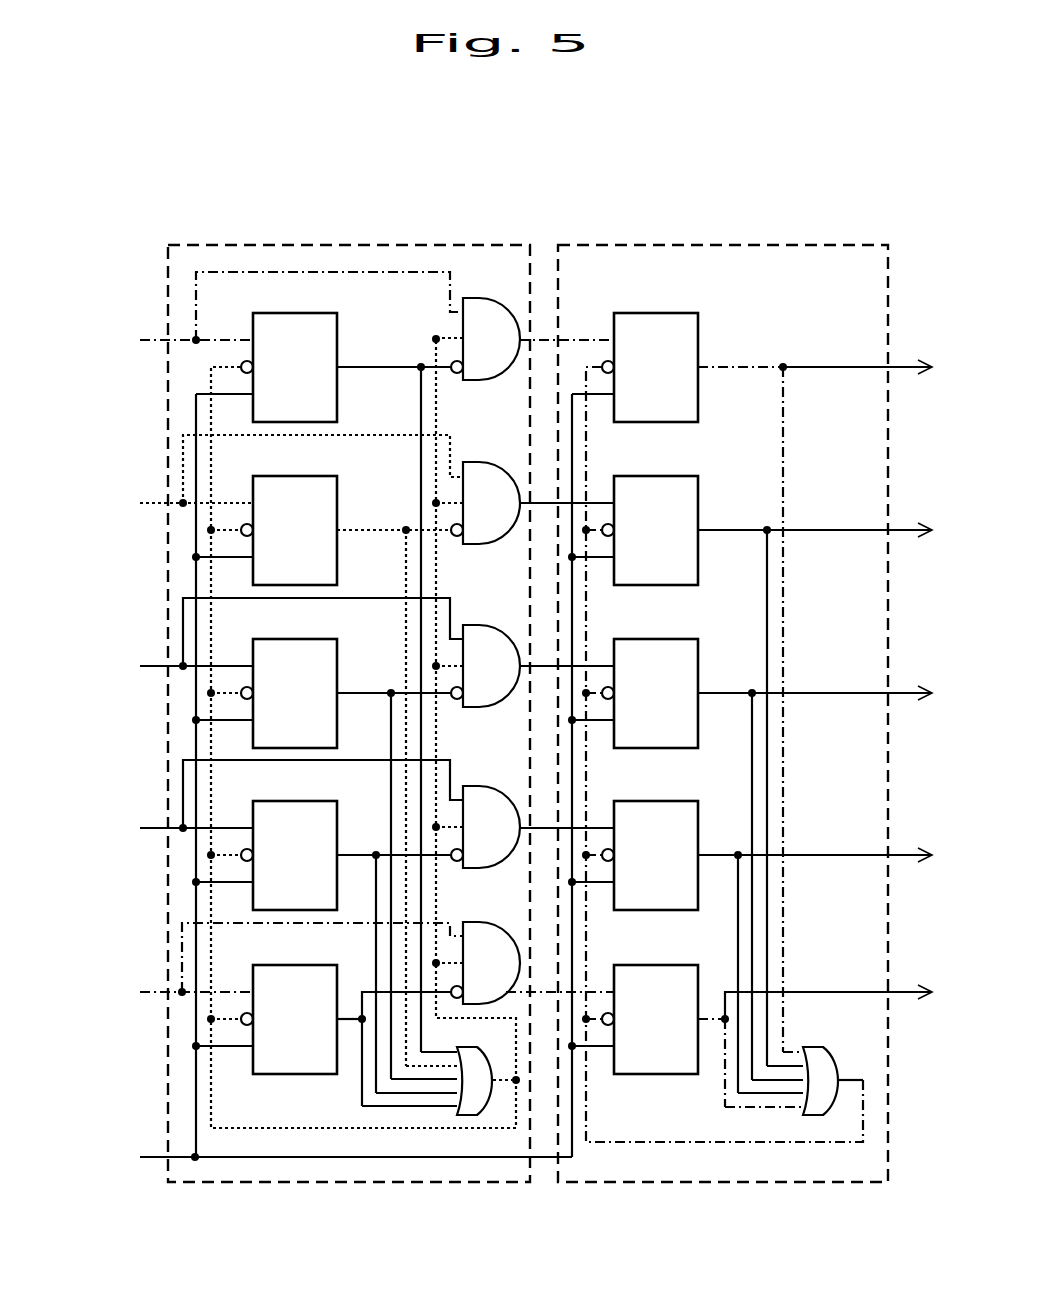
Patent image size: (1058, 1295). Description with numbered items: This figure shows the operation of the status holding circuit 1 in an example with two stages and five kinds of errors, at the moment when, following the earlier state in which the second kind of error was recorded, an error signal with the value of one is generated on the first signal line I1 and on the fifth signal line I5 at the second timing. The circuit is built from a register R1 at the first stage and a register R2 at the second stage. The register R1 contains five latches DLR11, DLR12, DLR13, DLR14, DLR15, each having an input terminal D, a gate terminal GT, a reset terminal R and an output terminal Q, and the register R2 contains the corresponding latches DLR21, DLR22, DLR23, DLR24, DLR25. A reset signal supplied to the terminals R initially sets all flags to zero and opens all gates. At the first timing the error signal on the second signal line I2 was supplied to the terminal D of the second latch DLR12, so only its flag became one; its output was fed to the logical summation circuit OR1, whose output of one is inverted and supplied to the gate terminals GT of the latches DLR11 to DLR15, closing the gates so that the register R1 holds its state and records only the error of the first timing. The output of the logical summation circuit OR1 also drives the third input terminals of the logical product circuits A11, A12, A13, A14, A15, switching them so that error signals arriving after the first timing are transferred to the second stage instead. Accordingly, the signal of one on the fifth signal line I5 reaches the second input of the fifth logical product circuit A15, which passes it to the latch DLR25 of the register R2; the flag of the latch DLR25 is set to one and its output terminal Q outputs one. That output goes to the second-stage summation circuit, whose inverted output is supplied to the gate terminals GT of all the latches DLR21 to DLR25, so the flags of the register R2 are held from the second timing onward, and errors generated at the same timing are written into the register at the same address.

The status holding circuit 1 is at (502, 670).
The register at the first stage R1 is at (349, 732).
The register at the second stage R2 is at (723, 732).
The first signal line I1 is at (152, 336).
The second signal line I2 is at (152, 499).
The fifth signal line I5 is at (152, 988).
The logical product circuit A11 is at (500, 298).
The logical product circuit A12 is at (500, 462).
The logical product circuit A13 is at (500, 625).
The logical product circuit A14 is at (500, 786).
The fifth logical product circuit A15 is at (500, 922).
The latch DLR11 is at (295, 354).
The second latch DLR12 is at (295, 517).
The latch DLR13 is at (295, 680).
The latch DLR14 is at (295, 842).
The latch DLR15 is at (295, 1006).
The latch DLR21 is at (656, 354).
The latch DLR22 is at (656, 517).
The latch DLR23 is at (656, 680).
The latch DLR24 is at (656, 842).
The latch DLR25 is at (656, 1006).
The logical summation circuit OR1 is at (470, 1118).